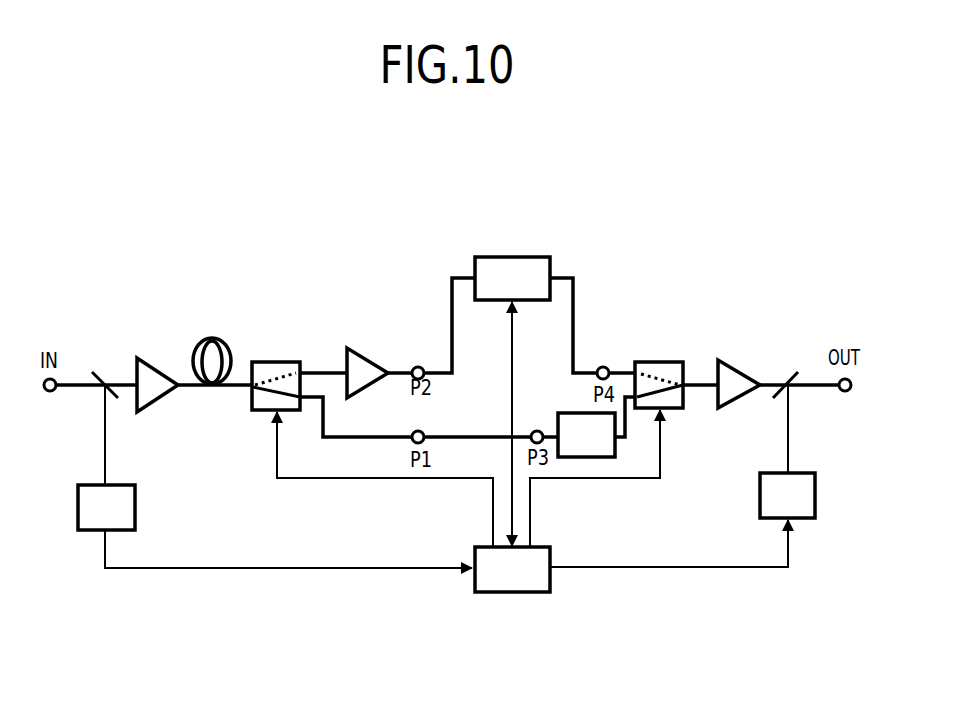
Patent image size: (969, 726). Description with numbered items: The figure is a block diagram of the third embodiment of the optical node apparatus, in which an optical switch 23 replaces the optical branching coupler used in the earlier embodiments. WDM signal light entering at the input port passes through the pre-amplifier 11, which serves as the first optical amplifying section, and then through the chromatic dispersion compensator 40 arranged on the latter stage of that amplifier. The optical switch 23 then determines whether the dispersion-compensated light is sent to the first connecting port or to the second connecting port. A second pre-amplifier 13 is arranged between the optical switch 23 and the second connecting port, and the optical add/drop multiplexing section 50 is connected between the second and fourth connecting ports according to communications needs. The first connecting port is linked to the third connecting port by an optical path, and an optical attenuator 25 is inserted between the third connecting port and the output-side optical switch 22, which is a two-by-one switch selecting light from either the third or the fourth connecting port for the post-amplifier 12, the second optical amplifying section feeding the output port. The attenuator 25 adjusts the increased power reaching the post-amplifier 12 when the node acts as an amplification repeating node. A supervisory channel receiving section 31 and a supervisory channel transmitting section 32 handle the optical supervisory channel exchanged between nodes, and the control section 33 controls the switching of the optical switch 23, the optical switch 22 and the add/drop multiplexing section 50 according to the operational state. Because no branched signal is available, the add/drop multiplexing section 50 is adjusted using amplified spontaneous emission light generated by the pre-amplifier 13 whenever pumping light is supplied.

The pre-amplifier 11 is at (156, 366).
The post-amplifier 12 is at (737, 360).
The pre-amplifier 13 is at (365, 347).
The optical switch 22 is at (672, 410).
The optical switch 23 is at (268, 413).
The optical attenuator 25 is at (575, 412).
The OSC receiving section 31 is at (92, 483).
The OSC transmitting section 32 is at (803, 473).
The control section 33 is at (532, 593).
The chromatic dispersion compensator 40 is at (212, 338).
The OADM section 50 is at (498, 255).